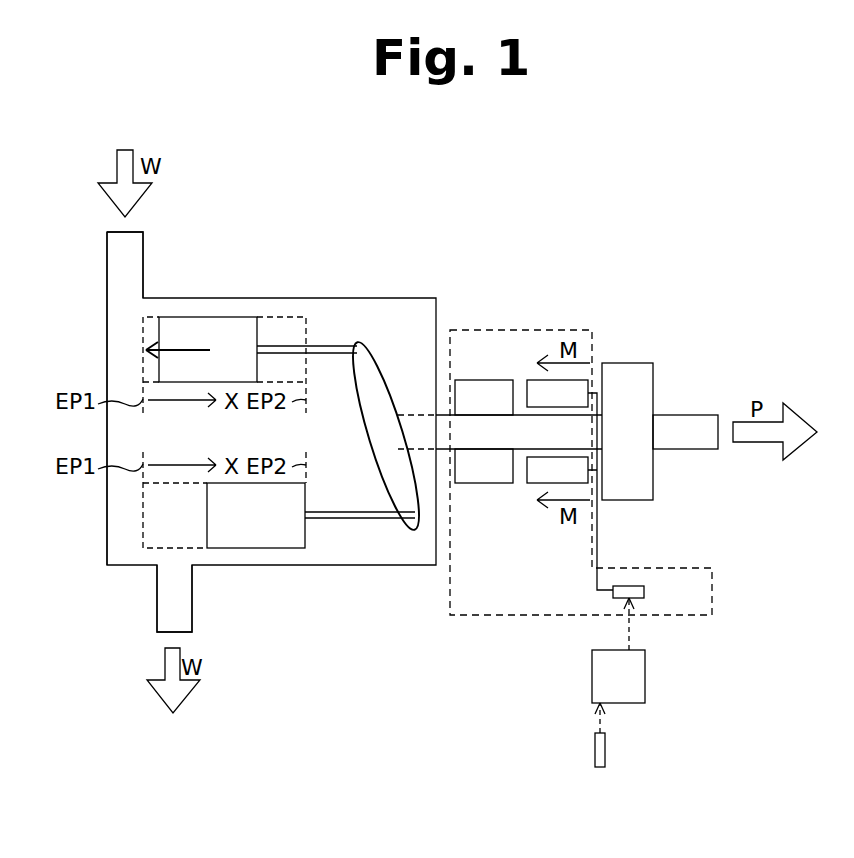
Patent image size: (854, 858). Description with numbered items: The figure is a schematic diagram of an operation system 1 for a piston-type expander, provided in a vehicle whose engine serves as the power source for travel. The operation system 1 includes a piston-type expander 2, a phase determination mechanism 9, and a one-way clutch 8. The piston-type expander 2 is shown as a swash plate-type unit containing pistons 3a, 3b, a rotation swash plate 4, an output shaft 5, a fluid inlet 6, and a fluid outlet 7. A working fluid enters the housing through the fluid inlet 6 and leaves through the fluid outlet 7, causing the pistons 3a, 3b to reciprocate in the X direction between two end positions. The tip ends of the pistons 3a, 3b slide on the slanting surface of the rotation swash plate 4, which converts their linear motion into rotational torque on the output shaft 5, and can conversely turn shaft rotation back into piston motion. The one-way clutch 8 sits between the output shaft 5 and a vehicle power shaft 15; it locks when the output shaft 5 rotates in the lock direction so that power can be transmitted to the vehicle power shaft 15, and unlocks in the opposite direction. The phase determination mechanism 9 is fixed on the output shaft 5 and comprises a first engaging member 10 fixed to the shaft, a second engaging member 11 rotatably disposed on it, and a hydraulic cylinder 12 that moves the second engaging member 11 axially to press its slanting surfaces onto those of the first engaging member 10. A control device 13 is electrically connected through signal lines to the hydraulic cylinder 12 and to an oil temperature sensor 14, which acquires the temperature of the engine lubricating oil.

The operation system 1 is at (521, 184).
The piston-type expander 2 is at (437, 298).
The piston 3a is at (238, 317).
The piston 3b is at (290, 549).
The rotation swash plate 4 is at (357, 342).
The output shaft 5 is at (521, 414).
The fluid inlet 6 is at (143, 284).
The fluid outlet 7 is at (192, 604).
The one-way clutch 8 is at (628, 501).
The phase determination mechanism 9 is at (591, 330).
The first engaging member 10 is at (480, 484).
The second engaging member 11 is at (525, 484).
The hydraulic cylinder 12 is at (644, 591).
The control device 13 is at (645, 678).
The oil temperature sensor 14 is at (605, 752).
The vehicle power shaft 15 is at (672, 450).